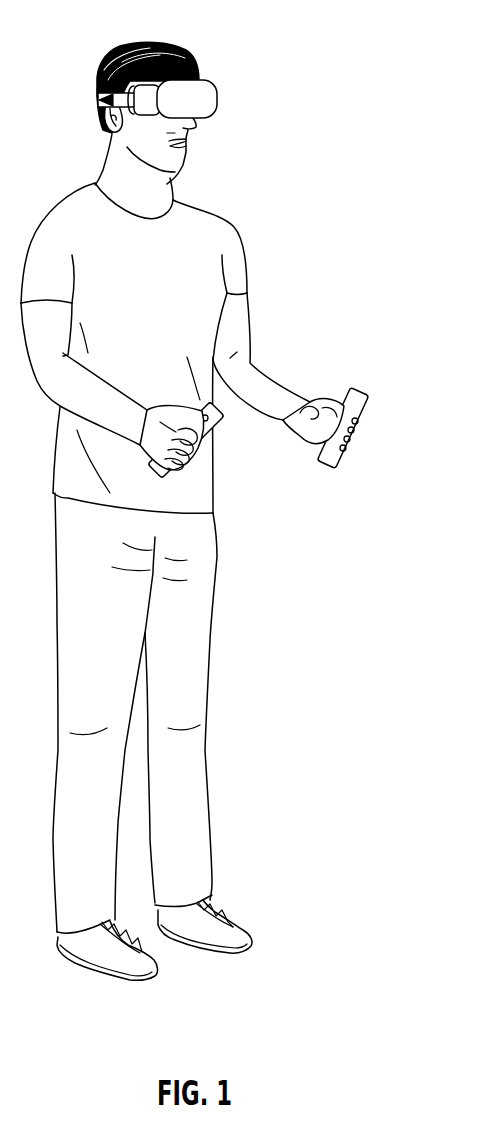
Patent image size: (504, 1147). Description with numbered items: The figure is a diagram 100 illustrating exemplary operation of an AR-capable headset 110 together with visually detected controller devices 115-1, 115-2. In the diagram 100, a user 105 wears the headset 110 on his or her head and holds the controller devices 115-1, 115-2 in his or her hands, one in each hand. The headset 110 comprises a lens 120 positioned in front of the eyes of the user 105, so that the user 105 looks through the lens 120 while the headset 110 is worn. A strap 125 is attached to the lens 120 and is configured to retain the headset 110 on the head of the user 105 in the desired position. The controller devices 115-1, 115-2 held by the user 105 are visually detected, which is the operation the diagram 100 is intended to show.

The diagram 100 is at (376, 44).
The user 105 is at (254, 206).
The headset 110 is at (223, 95).
The controller device 115-1 is at (365, 384).
The controller device 115-2 is at (228, 416).
The lens 120 is at (209, 108).
The strap 125 is at (97, 108).